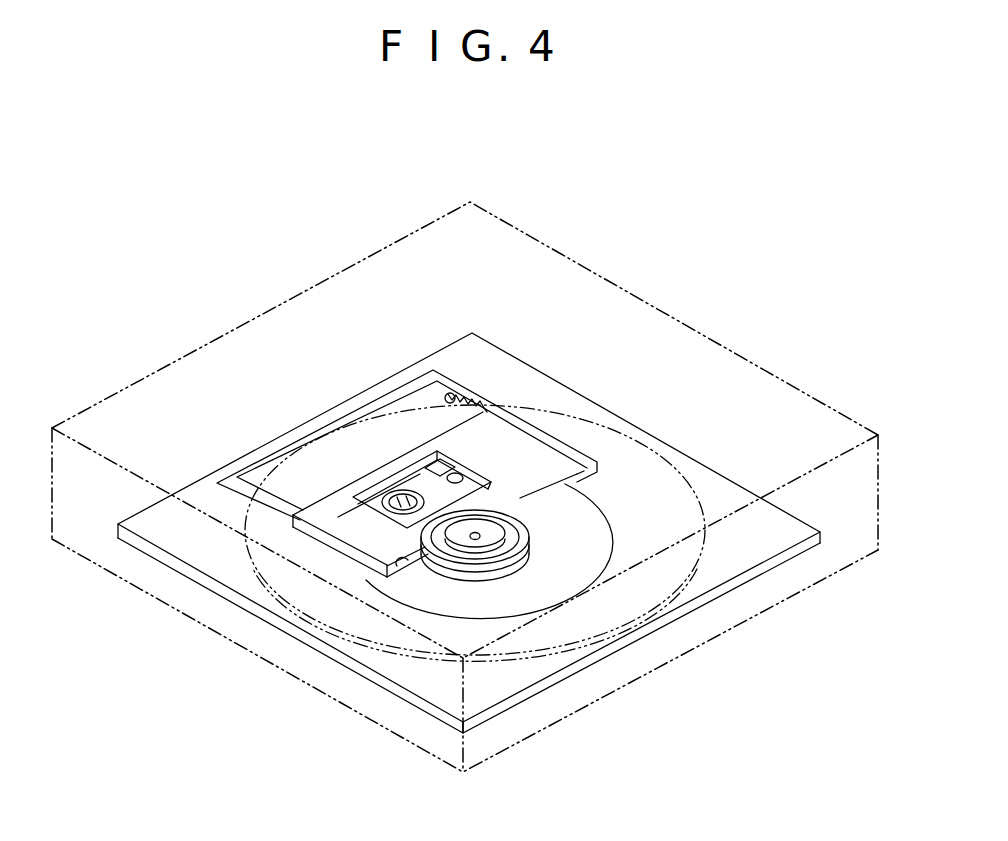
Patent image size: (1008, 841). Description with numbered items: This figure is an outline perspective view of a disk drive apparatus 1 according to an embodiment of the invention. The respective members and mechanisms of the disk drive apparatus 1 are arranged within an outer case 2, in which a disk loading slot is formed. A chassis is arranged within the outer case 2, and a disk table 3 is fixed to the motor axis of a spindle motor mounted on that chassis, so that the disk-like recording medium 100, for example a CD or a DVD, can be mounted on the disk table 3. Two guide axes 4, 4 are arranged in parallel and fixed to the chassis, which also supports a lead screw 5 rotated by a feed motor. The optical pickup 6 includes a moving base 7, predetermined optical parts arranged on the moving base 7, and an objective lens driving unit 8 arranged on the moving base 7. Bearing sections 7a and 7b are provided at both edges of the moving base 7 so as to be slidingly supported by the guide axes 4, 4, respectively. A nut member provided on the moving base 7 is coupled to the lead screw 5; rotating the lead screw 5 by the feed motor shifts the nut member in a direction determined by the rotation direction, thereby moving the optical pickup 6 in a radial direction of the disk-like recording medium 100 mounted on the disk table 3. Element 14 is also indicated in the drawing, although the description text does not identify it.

The disk drive apparatus 1 is at (645, 200).
The outer case 2 is at (492, 212).
The disk table 3 is at (530, 524).
The guide axis 4 is at (383, 359).
The lead screw 5 is at (450, 395).
The optical pickup 6 is at (657, 268).
The moving base 7 is at (543, 418).
The bearing section 7a is at (249, 397).
The bearing section 7b is at (634, 393).
The objective lens driving unit 8 is at (356, 374).
The carriage cover 14 is at (328, 384).
The disk-like recording medium 100 is at (554, 504).